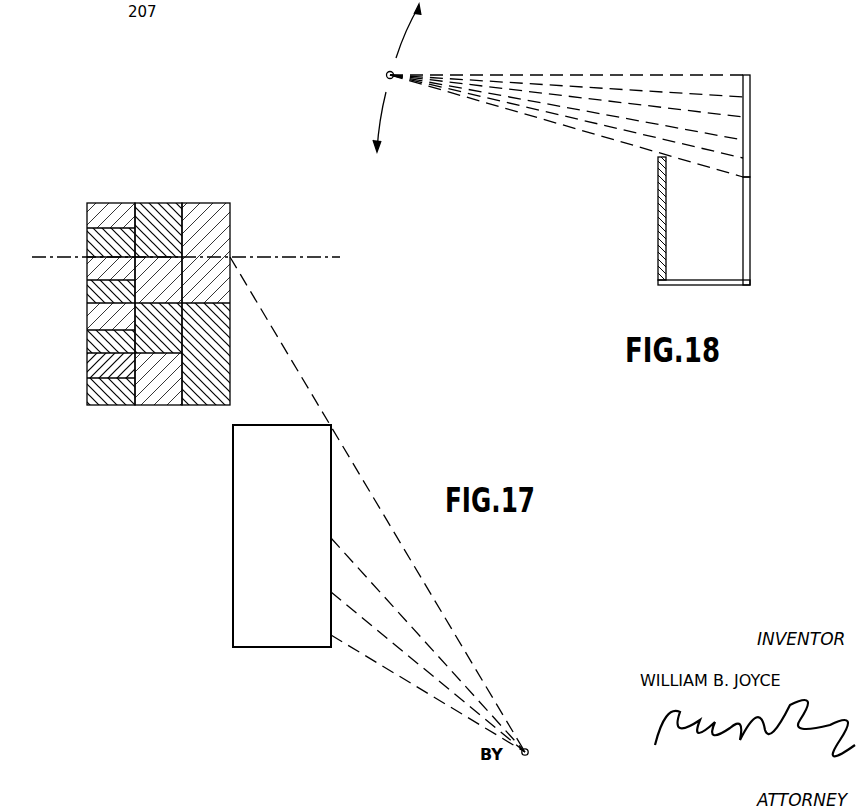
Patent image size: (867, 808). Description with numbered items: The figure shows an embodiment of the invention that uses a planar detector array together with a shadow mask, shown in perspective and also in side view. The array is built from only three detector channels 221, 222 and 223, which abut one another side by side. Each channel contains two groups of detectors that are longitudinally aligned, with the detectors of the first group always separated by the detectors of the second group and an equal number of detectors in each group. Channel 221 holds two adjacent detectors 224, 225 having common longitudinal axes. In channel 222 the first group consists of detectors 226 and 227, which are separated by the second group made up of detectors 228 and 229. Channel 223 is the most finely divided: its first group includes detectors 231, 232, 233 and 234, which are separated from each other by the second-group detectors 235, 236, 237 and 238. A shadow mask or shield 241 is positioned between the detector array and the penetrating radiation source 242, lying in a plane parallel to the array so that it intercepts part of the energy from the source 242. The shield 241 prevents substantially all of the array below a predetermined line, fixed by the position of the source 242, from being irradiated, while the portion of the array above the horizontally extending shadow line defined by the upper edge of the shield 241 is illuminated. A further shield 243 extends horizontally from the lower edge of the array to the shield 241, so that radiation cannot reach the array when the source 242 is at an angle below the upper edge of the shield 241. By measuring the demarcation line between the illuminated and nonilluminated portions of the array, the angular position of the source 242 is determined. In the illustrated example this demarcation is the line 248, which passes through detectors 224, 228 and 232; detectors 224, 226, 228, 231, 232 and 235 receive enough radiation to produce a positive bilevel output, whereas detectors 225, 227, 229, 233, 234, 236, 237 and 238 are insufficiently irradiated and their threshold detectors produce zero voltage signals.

In FIG. 17, the detector channel 221 is at (212, 202).
In FIG. 17, the detector channel 222 is at (168, 202).
In FIG. 17, the detector channel 223 is at (109, 196).
In FIG. 17, the detector 224 is at (215, 226).
In FIG. 18, the detector 224 is at (750, 156).
In FIG. 17, the detector 225 is at (230, 370).
In FIG. 18, the detector 225 is at (750, 238).
In FIG. 17, the detector 226 is at (155, 202).
In FIG. 17, the detector 227 is at (170, 345).
In FIG. 17, the detector 228 is at (163, 277).
In FIG. 17, the detector 229 is at (148, 390).
In FIG. 17, the detector 231 is at (95, 214).
In FIG. 17, the detector 232 is at (95, 271).
In FIG. 17, the detector 233 is at (95, 318).
In FIG. 17, the detector 234 is at (95, 368).
In FIG. 17, the detector 235 is at (95, 239).
In FIG. 17, the detector 236 is at (95, 289).
In FIG. 17, the detector 237 is at (95, 343).
In FIG. 17, the detector 238 is at (107, 402).
In FIG. 17, the shadow mask or shield 241 is at (233, 565).
In FIG. 18, the shadow mask or shield 241 is at (658, 212).
In FIG. 17, the penetrating radiation source 242 is at (528, 750).
In FIG. 18, the penetrating radiation source 242 is at (386, 76).
In FIG. 18, the shield 243 is at (735, 286).
In FIG. 17, the demarcation line 248 is at (340, 246).